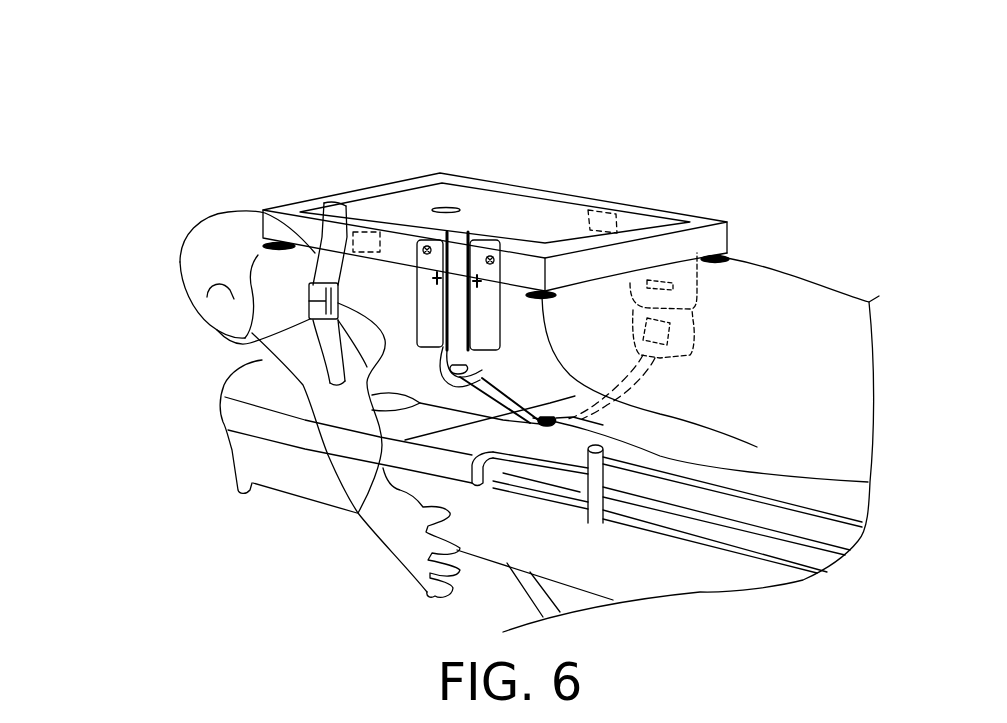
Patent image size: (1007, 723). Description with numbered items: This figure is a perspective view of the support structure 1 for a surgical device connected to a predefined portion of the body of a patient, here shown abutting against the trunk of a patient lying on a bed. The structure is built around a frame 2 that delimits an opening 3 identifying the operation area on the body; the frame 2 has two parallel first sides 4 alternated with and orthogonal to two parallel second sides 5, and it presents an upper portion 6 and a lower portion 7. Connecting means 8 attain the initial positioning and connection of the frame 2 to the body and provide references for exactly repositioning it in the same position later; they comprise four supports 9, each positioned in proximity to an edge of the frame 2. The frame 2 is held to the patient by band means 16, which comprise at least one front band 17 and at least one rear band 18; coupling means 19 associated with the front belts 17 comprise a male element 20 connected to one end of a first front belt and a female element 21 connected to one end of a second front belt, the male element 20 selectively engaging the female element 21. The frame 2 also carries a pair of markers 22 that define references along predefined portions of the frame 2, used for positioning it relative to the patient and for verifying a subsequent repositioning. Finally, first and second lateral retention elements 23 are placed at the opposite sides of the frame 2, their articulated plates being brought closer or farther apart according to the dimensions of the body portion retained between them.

The support structure 1 is at (148, 113).
The frame 2 is at (700, 217).
The opening 3 is at (538, 204).
The first sides 4 is at (551, 208).
The second sides 5 is at (313, 205).
The upper portion 6 is at (622, 162).
The lower portion 7 is at (713, 283).
The connecting means 8 is at (255, 272).
The supports 9 is at (445, 205).
The band means 16 is at (237, 352).
The front band 17 is at (277, 210).
The rear band 18 is at (358, 513).
The coupling means 19 is at (295, 345).
The male element 20 is at (339, 222).
The female element 21 is at (385, 345).
The markers 22 is at (363, 231).
The lateral retention elements 23 is at (470, 228).